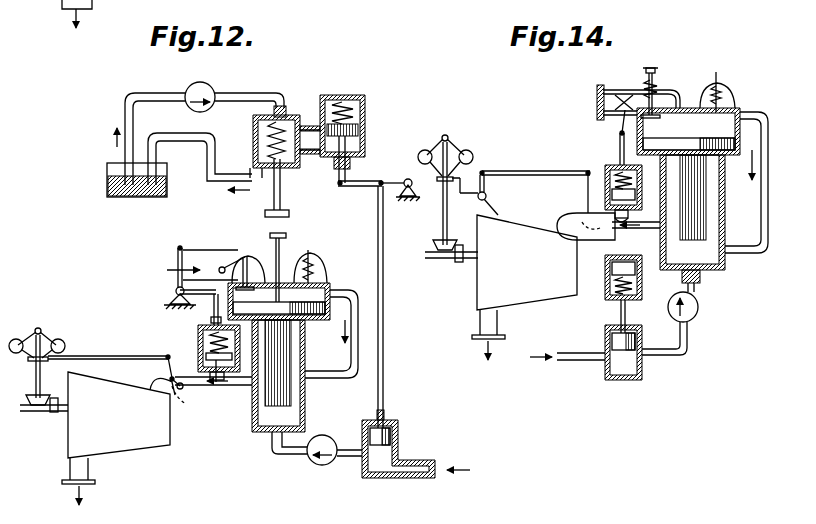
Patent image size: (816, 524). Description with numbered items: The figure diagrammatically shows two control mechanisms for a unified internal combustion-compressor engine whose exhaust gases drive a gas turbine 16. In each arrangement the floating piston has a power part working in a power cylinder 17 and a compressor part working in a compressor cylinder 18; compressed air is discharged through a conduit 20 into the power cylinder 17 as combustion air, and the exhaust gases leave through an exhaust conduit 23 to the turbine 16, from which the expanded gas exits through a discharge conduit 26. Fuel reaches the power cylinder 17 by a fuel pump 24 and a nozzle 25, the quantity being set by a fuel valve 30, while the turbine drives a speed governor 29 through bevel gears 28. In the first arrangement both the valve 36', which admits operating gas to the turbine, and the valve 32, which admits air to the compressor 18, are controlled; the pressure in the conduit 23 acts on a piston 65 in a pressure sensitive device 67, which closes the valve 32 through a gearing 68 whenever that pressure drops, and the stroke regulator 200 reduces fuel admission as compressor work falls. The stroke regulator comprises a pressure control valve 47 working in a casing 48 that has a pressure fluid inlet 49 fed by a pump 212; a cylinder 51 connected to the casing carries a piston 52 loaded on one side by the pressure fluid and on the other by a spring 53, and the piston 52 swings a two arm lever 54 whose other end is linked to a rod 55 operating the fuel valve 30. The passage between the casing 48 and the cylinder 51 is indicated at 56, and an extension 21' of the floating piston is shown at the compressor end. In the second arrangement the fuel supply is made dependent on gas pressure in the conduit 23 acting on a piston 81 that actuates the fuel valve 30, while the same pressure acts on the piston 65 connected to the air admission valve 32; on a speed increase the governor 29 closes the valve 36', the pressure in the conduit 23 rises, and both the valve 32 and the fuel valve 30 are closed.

In FIG. 12, the gas turbine 16 is at (121, 415).
In FIG. 14, the gas turbine 16 is at (527, 262).
In FIG. 12, the power cylinder 17 is at (262, 430).
In FIG. 14, the power cylinder 17 is at (702, 255).
In FIG. 12, the compressor cylinder 18 is at (279, 285).
In FIG. 14, the compressor cylinder 18 is at (684, 114).
In FIG. 12, the conduit 20 is at (330, 380).
In FIG. 14, the conduit 20 is at (768, 216).
In FIG. 12, the valve 21' is at (294, 263).
In FIG. 12, the exhaust conduit 23 is at (212, 390).
In FIG. 14, the exhaust conduit 23 is at (648, 228).
In FIG. 12, the fuel pump 24 is at (316, 465).
In FIG. 14, the fuel pump 24 is at (700, 318).
In FIG. 14, the nozzle 25 is at (700, 280).
In FIG. 12, the discharge conduit 26 is at (90, 468).
In FIG. 14, the discharge conduit 26 is at (500, 322).
In FIG. 14, the governor drive 28 is at (452, 246).
In FIG. 12, the speed governor 29 is at (36, 325).
In FIG. 14, the speed governor 29 is at (447, 136).
In FIG. 12, the fuel valve 30 is at (378, 462).
In FIG. 14, the fuel valve 30 is at (612, 343).
In FIG. 12, the valve 32 is at (222, 266).
In FIG. 14, the valve 32 is at (633, 88).
In FIG. 12, the valve 36' is at (117, 404).
In FIG. 14, the valve 36' is at (586, 212).
In FIG. 12, the pressure control valve 47 is at (270, 149).
In FIG. 12, the casing 48 is at (256, 123).
In FIG. 12, the pressure fluid inlet 49 is at (283, 105).
In FIG. 12, the cylinder 51 is at (365, 112).
In FIG. 12, the piston 52 is at (356, 132).
In FIG. 12, the spring 53 is at (346, 97).
In FIG. 12, the two arm lever 54 is at (362, 187).
In FIG. 12, the rod 55 is at (378, 242).
In FIG. 12, the passage 56 is at (316, 153).
In FIG. 12, the piston 65 is at (200, 346).
In FIG. 14, the piston 65 is at (606, 175).
In FIG. 12, the pressure sensitive device 67 is at (205, 326).
In FIG. 12, the gearing 68 is at (176, 282).
In FIG. 14, the piston 81 is at (606, 284).
In FIG. 12, the stroke regulator 200 is at (314, 109).
In FIG. 12, the pump 212 is at (190, 88).